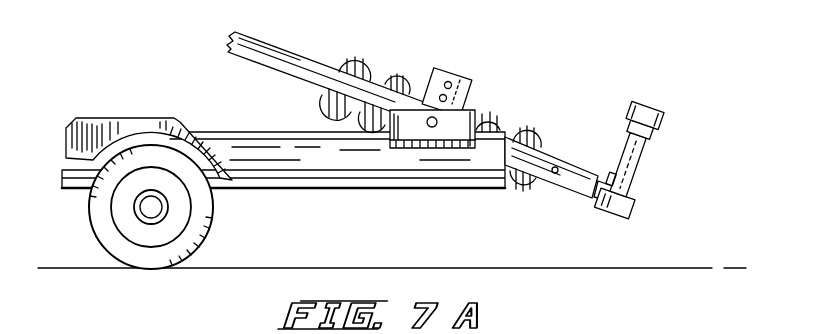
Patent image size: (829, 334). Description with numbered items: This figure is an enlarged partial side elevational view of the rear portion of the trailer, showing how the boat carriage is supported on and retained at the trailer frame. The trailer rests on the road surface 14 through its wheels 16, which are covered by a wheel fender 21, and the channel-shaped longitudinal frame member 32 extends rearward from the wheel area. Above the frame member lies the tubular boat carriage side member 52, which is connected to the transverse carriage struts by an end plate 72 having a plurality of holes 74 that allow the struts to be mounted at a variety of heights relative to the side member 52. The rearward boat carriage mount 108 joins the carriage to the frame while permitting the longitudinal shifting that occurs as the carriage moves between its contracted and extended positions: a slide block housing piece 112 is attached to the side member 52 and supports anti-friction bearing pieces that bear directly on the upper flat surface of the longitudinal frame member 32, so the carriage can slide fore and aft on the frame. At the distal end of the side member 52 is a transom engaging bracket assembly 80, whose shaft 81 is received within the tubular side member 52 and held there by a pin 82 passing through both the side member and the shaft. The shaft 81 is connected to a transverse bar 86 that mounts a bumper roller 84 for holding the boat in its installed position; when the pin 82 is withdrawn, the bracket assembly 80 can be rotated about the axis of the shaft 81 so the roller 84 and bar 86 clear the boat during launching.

The road surface 14 is at (677, 268).
The wheels 16 is at (125, 205).
The wheel fender 21 is at (140, 127).
The longitudinal frame member 32 is at (222, 147).
The boat carriage side member 52 is at (304, 62).
The end plate 72 is at (442, 66).
The holes 74 is at (459, 92).
The transom engaging bracket assembly 80 is at (664, 163).
The shaft 81 is at (630, 208).
The pin 82 is at (556, 170).
The bumper roller 84 is at (665, 126).
The transverse bar 86 is at (648, 147).
The rearward boat carriage mount 108 is at (440, 200).
The slide block housing piece 112 is at (476, 110).